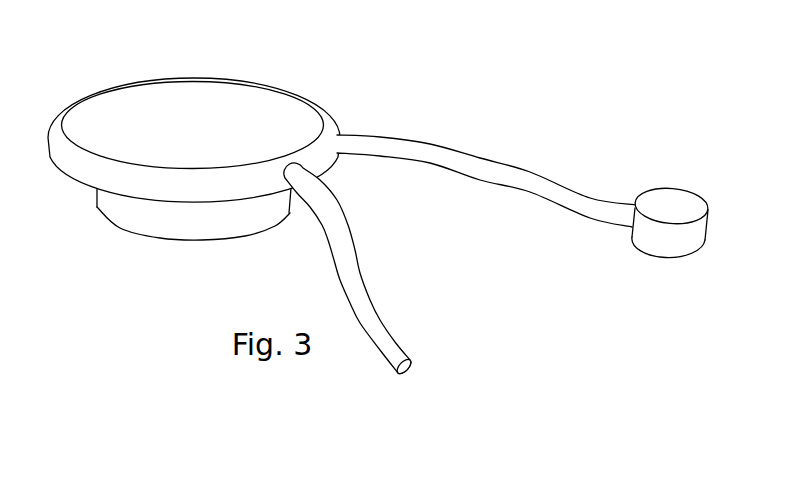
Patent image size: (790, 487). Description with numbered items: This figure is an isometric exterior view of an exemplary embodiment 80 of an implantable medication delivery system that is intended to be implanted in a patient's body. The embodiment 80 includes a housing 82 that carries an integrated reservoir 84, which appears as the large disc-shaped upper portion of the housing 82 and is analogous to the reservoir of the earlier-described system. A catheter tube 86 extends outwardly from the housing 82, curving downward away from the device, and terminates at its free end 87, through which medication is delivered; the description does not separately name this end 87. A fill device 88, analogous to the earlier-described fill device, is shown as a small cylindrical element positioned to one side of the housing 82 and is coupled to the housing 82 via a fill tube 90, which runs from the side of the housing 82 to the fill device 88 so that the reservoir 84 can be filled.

The implantable medication delivery system embodiment 80 is at (311, 48).
The housing 82 is at (175, 240).
The integrated reservoir 84 is at (108, 88).
The catheter tube 86 is at (358, 267).
The tube end opening 87 is at (417, 367).
The fill device 88 is at (652, 177).
The fill tube 90 is at (430, 143).